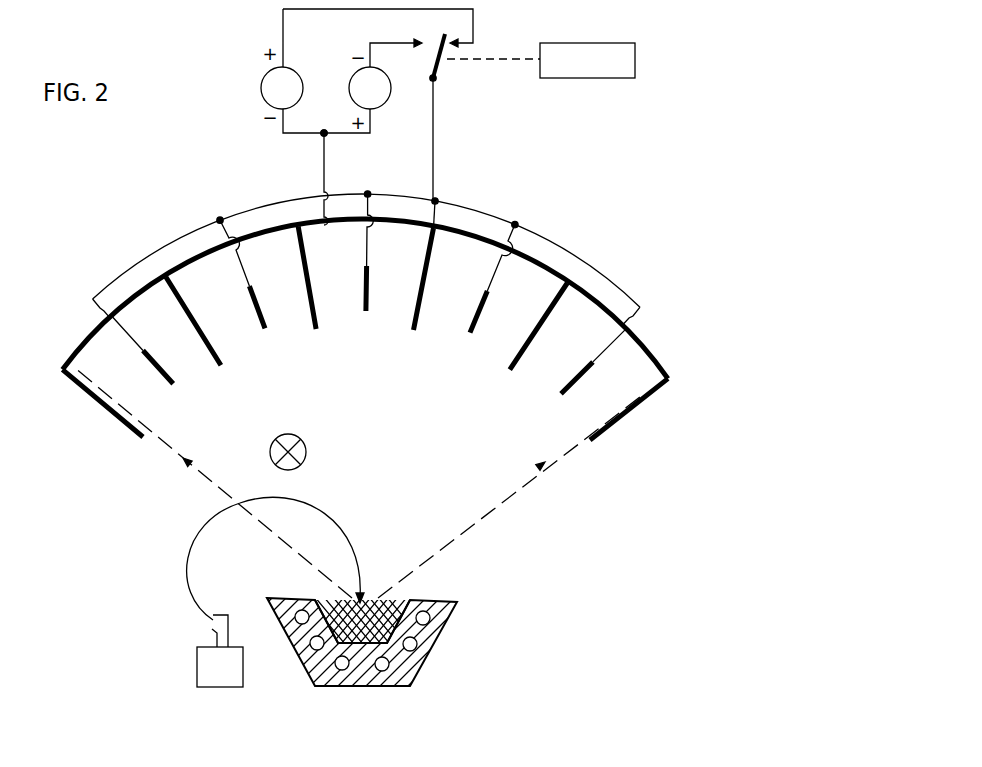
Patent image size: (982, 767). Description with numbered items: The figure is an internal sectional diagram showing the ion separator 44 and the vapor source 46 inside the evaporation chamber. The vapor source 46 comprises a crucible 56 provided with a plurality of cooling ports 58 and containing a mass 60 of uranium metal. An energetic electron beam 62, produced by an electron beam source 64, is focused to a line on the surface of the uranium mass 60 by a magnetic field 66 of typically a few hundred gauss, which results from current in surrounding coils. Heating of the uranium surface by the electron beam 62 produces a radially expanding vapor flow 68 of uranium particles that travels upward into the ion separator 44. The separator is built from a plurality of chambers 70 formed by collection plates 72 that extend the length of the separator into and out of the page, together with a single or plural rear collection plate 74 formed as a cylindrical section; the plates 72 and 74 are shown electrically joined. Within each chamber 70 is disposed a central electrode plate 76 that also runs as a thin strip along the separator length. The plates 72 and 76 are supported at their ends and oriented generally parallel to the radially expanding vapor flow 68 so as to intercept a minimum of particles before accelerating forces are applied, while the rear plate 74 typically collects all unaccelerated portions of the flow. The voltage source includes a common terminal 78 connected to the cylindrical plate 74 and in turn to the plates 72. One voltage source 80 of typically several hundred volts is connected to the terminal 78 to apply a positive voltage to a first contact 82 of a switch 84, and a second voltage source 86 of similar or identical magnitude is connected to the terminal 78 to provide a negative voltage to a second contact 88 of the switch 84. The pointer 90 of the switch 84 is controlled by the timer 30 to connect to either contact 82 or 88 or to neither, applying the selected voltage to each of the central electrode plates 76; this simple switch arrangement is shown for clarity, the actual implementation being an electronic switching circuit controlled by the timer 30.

The timer 30 is at (580, 43).
The ion separator 44 is at (691, 379).
The vapor source 46 is at (473, 615).
The crucible 56 is at (440, 637).
The cooling ports 58 is at (412, 645).
The mass of uranium metal 60 is at (387, 607).
The electron beam 62 is at (343, 545).
The electron beam source 64 is at (205, 670).
The magnetic field 66 is at (303, 440).
The vapor flow 68 is at (497, 503).
The chambers 70 is at (528, 277).
The collection plates 72 is at (313, 326).
The rear collection plate 74 is at (647, 347).
The central electrode plate 76 is at (147, 360).
The common terminal 78 is at (322, 135).
The voltage source 80 is at (263, 93).
The first contact 82 is at (452, 42).
The switch 84 is at (455, 67).
The second voltage source 86 is at (385, 105).
The second contact 88 is at (421, 41).
The pointer 90 is at (437, 71).